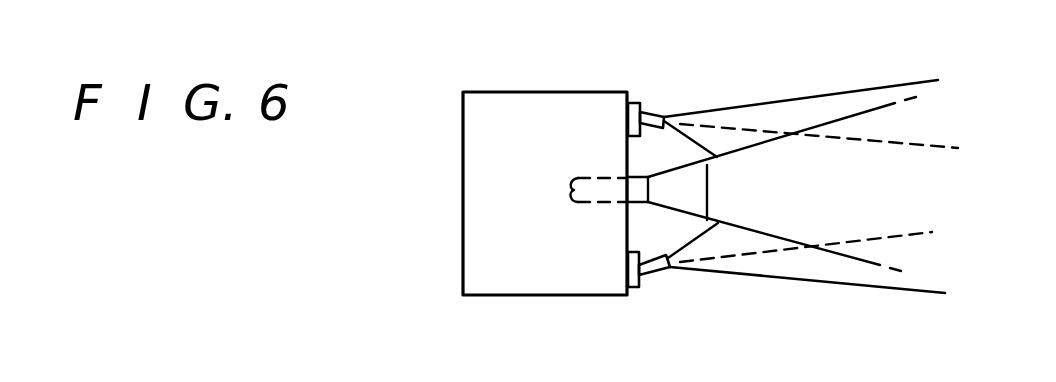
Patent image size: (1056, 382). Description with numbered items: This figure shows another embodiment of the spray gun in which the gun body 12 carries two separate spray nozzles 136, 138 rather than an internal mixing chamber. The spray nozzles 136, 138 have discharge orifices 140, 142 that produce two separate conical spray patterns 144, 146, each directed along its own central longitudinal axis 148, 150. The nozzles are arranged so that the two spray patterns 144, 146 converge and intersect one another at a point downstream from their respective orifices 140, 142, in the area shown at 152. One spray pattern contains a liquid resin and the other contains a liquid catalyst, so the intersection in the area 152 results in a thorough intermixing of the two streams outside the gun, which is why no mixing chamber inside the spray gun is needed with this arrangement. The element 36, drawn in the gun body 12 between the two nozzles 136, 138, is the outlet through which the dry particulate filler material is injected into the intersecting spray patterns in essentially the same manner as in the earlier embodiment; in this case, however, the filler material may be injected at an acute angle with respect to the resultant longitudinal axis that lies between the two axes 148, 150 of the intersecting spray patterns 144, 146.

The housing 12 is at (505, 107).
The receiver 36 is at (597, 183).
The spray nozzle 136 is at (640, 117).
The spray nozzle 138 is at (640, 287).
The discharge orifice 140 is at (673, 118).
The discharge orifice 142 is at (673, 270).
The conical spray pattern 144 is at (823, 95).
The conical spray pattern 146 is at (860, 288).
The central longitudinal axis 148 is at (940, 147).
The central longitudinal axis 150 is at (917, 232).
The area of intersection 152 is at (880, 198).